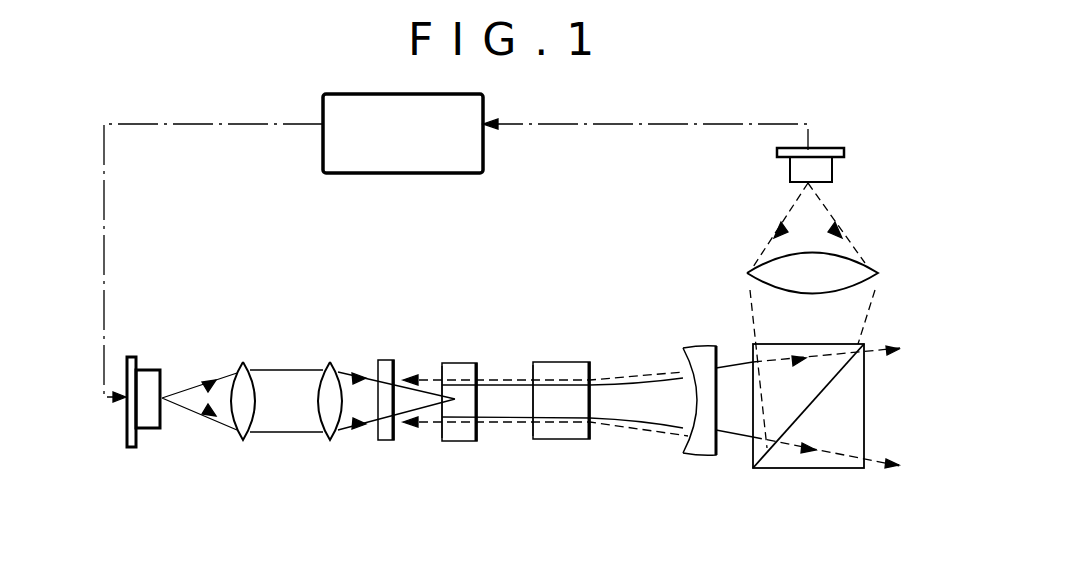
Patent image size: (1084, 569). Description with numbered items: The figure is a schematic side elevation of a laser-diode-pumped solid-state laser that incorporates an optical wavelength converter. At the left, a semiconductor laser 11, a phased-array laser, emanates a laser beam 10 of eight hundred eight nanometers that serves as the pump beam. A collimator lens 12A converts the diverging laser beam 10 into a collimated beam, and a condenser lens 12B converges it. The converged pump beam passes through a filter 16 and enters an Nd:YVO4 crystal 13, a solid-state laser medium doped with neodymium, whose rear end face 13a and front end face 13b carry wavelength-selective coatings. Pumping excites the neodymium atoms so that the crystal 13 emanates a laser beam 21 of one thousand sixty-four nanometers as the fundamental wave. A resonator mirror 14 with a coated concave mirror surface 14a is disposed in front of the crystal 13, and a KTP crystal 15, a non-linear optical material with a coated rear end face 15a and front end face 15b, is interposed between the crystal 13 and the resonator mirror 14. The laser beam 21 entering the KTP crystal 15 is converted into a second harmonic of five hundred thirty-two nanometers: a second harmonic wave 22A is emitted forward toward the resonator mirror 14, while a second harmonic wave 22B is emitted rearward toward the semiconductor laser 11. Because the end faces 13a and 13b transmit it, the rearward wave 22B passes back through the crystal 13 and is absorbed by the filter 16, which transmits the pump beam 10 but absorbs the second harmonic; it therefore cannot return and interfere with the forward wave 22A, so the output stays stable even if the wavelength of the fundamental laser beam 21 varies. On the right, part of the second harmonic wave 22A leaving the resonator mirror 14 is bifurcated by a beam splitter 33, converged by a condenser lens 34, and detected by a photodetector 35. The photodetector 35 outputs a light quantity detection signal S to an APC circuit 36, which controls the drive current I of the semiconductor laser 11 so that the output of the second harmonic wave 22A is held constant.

The laser beam 10 is at (227, 372).
The semiconductor laser 11 is at (148, 370).
The collimator lens 12A is at (246, 362).
The condenser lens 12B is at (332, 362).
The Nd:YVO4 crystal 13 is at (459, 350).
The rear end face 13a is at (440, 372).
The front end face 13b is at (478, 365).
The resonator mirror 14 is at (710, 343).
The concave mirror surface 14a is at (688, 436).
The KTP crystal 15 is at (575, 350).
The rear end face 15a is at (525, 368).
The front end face 15b is at (597, 372).
The filter 16 is at (385, 443).
The laser beam 21 is at (635, 412).
The second harmonic wave 22A is at (751, 443).
The second harmonic wave 22B is at (505, 422).
The beam splitter 33 is at (813, 470).
The condenser lens 34 is at (772, 270).
The photodetector 35 is at (802, 168).
The APC circuit 36 is at (420, 175).
The drive current I is at (104, 228).
The light quantity detection signal S is at (572, 126).